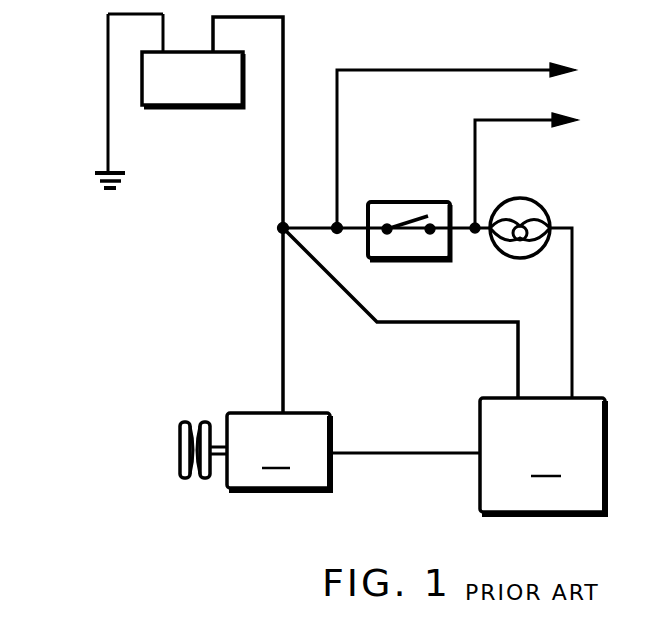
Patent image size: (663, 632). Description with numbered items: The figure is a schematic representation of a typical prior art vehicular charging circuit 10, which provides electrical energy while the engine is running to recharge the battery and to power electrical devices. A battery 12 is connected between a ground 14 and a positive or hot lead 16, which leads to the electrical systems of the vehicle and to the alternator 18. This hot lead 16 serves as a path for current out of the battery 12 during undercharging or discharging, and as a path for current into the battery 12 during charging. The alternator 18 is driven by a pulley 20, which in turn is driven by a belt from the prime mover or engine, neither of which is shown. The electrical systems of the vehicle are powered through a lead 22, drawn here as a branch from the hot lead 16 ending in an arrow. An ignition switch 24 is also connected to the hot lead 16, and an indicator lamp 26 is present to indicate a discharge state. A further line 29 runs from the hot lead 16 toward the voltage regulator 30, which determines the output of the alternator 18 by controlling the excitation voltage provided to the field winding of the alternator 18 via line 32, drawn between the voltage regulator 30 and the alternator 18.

The charging circuit 10 is at (170, 318).
The battery 12 is at (175, 60).
The ground 14 is at (105, 172).
The positive or hot lead 16 is at (285, 48).
The alternator 18 is at (278, 451).
The pulley 20 is at (179, 442).
The lead 22 is at (410, 68).
The ignition switch 24 is at (417, 217).
The indicator lamp 26 is at (544, 206).
The sense line 29 is at (408, 324).
The voltage regulator 30 is at (542, 456).
The line 32 is at (408, 455).